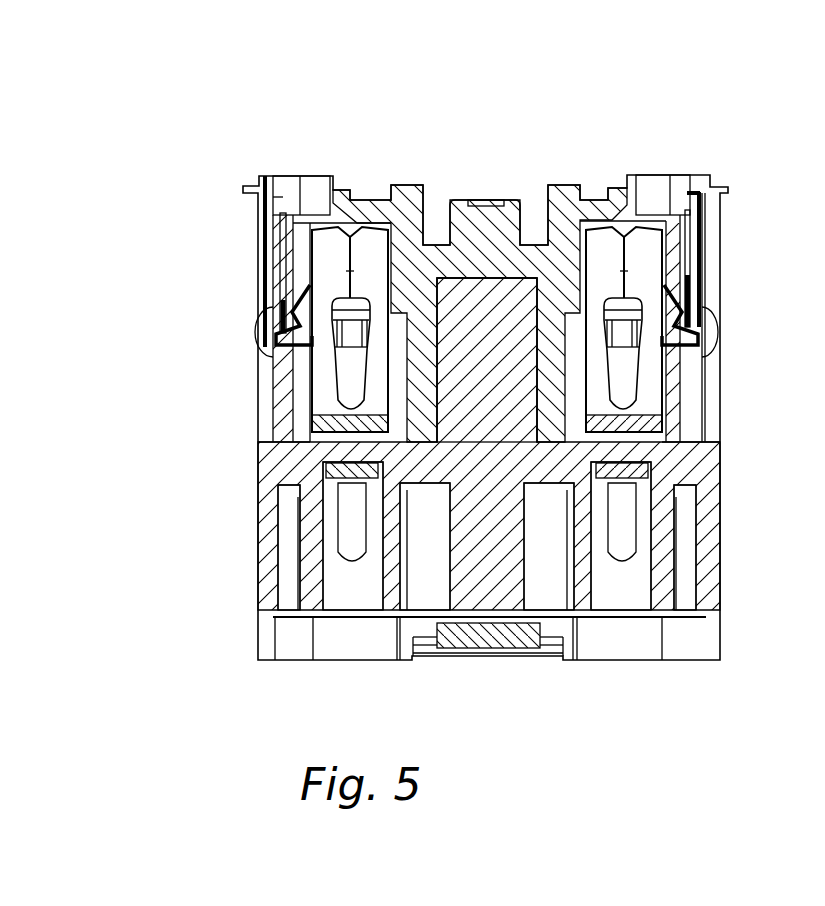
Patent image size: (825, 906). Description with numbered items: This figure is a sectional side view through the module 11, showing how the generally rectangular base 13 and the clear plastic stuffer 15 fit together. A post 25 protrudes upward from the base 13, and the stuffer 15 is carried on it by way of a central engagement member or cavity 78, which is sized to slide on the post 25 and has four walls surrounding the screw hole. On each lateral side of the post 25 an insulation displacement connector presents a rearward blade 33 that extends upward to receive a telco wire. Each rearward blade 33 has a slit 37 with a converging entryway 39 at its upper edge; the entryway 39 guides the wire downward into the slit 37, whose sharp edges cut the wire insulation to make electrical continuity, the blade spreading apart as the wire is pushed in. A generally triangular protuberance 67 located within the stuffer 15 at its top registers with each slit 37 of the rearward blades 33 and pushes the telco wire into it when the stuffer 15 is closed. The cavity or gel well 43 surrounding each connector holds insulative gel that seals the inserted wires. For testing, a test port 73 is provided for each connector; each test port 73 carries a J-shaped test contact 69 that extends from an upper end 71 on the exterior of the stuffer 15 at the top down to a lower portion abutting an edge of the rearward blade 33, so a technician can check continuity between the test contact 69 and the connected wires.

The module 11 is at (228, 159).
The base 13 is at (272, 585).
The stuffer 15 is at (412, 186).
The post 25 is at (505, 322).
The rearward blade 33 is at (327, 244).
The slit 37 is at (420, 197).
The converging entryway 39 is at (598, 245).
The gel well 43 is at (673, 392).
The protuberance 67 is at (385, 197).
The test contact 69 is at (690, 368).
The upper end 71 is at (690, 198).
The test port 73 is at (676, 195).
The central cavity 78 is at (437, 410).